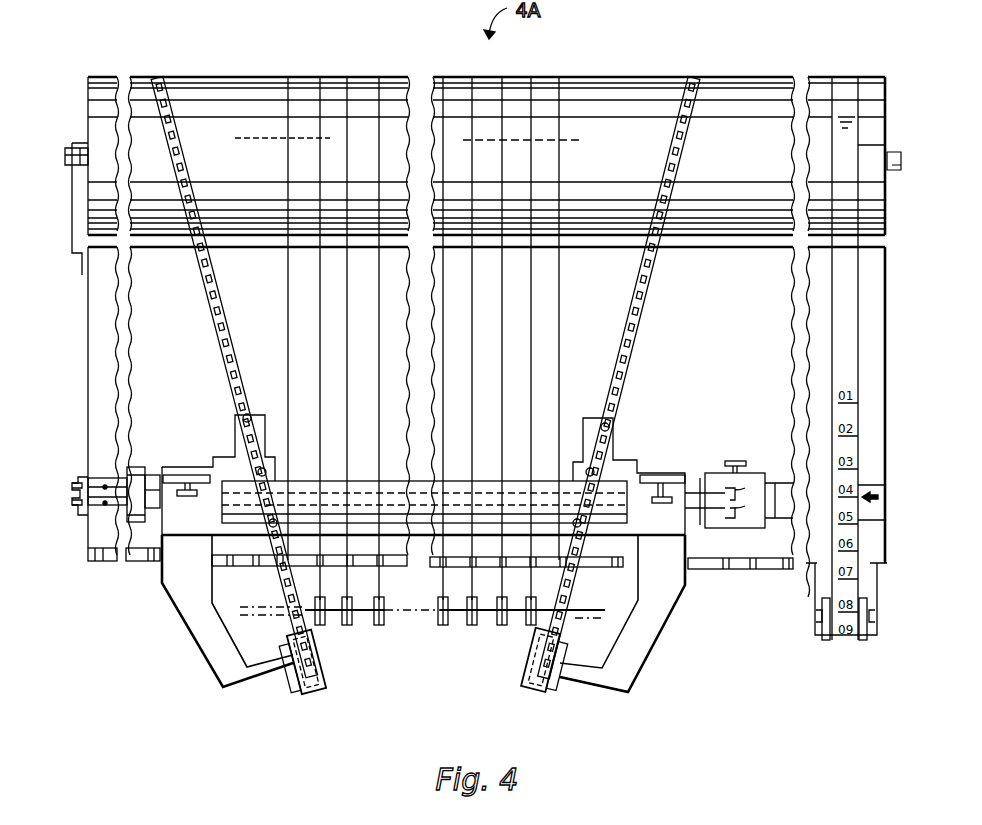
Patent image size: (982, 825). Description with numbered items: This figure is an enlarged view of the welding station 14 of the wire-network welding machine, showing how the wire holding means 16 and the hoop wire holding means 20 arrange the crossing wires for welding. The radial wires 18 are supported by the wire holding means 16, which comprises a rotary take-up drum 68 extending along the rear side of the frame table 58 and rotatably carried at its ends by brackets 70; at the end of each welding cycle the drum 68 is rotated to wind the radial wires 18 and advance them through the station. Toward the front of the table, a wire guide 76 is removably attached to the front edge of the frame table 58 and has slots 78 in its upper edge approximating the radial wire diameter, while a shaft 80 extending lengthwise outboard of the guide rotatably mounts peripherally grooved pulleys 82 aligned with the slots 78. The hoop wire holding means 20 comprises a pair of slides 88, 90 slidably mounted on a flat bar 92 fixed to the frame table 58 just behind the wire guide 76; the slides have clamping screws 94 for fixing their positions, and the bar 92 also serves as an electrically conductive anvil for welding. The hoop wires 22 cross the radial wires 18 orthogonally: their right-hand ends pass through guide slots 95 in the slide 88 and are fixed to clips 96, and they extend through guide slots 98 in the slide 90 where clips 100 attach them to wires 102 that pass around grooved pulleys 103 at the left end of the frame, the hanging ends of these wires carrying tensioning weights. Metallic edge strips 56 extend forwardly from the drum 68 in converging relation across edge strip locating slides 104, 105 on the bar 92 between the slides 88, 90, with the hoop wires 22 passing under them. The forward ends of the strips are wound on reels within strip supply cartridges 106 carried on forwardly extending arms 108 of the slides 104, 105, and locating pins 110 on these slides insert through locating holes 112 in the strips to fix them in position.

The welding station 14 is at (418, 590).
The wire holding means 16 is at (446, 638).
The radial wires 18 is at (543, 268).
The hoop wire holding means 20 is at (722, 462).
The hoop wires 22 is at (521, 507).
The edge strips 56 is at (156, 86).
The frame table 58 is at (88, 355).
The take-up drum 68 is at (218, 77).
The brackets 70 is at (73, 143).
The wire guide 76 is at (92, 563).
The slots 78 is at (141, 563).
The shaft 80 is at (380, 622).
The pulleys 82 is at (328, 622).
The slide 88 is at (745, 528).
The slide 90 is at (136, 468).
The bar 92 is at (780, 515).
The clamping screws 94 is at (741, 461).
The guide slots 95 is at (704, 490).
The clips 96 is at (748, 489).
The guide slots 98 is at (160, 470).
The clips 100 is at (104, 504).
The wires 102 is at (104, 486).
The pulleys 103 is at (76, 486).
The edge strip locating slide 104 is at (679, 617).
The edge strip locating slide 105 is at (192, 643).
The strip supply cartridges 106 is at (315, 691).
The arms 108 is at (250, 673).
The locating pins 110 is at (280, 470).
The locating holes 112 is at (215, 267).